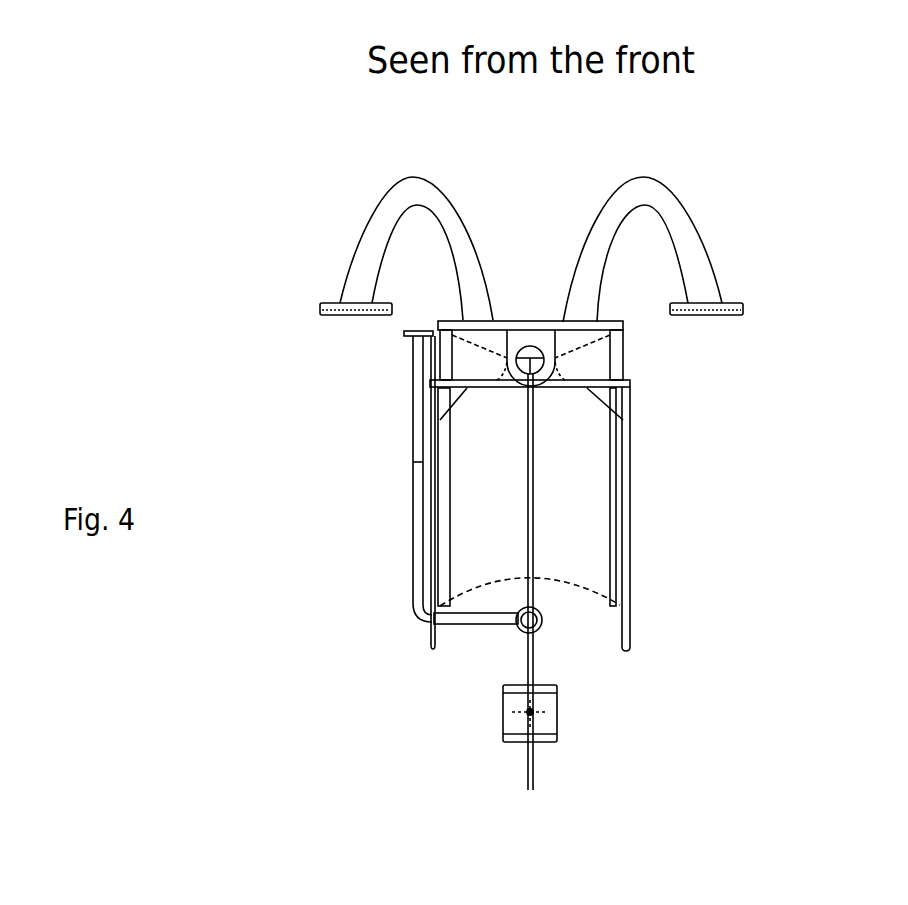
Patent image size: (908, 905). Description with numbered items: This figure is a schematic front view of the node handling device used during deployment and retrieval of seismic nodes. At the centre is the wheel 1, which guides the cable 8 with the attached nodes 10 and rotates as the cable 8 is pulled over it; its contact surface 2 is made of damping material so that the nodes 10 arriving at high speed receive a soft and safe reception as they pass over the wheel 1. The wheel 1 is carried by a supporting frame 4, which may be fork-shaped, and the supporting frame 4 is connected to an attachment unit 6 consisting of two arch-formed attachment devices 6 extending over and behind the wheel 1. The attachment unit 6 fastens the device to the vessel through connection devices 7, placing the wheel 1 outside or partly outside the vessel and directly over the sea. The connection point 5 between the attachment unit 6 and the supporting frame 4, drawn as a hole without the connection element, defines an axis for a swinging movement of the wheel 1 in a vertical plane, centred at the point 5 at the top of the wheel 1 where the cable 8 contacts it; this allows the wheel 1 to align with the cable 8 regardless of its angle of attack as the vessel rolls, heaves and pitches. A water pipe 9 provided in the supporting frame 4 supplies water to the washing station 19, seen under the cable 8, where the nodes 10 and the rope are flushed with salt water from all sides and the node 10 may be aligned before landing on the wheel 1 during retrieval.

The wheel 1 is at (618, 605).
The contact surface 2 is at (588, 494).
The supporting frame 4 is at (637, 637).
The connection point 5 is at (540, 360).
The attachment unit 6 is at (720, 264).
The connection devices 7 is at (332, 318).
The cable 8 is at (547, 768).
The water pipe 9 is at (410, 572).
The node 10 is at (493, 723).
The washing station 19 is at (515, 635).